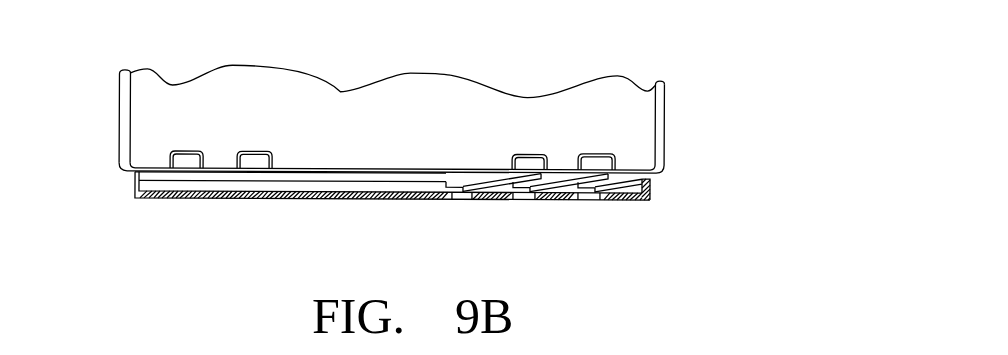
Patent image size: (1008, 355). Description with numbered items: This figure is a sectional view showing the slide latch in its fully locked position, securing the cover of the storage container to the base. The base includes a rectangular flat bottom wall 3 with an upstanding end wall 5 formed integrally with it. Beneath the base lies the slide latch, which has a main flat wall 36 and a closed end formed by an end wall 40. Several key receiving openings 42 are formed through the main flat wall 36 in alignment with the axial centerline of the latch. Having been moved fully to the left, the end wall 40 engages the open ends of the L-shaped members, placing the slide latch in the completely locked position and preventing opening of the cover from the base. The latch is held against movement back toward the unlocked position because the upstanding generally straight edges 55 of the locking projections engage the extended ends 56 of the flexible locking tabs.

The bottom wall 3 is at (244, 88).
The end wall 5 is at (130, 113).
The main flat wall 36 is at (230, 199).
The end wall 40 is at (652, 186).
The key receiving openings 42 is at (463, 200).
The upstanding generally straight edges 55 is at (547, 201).
The extended ends 56 is at (621, 201).